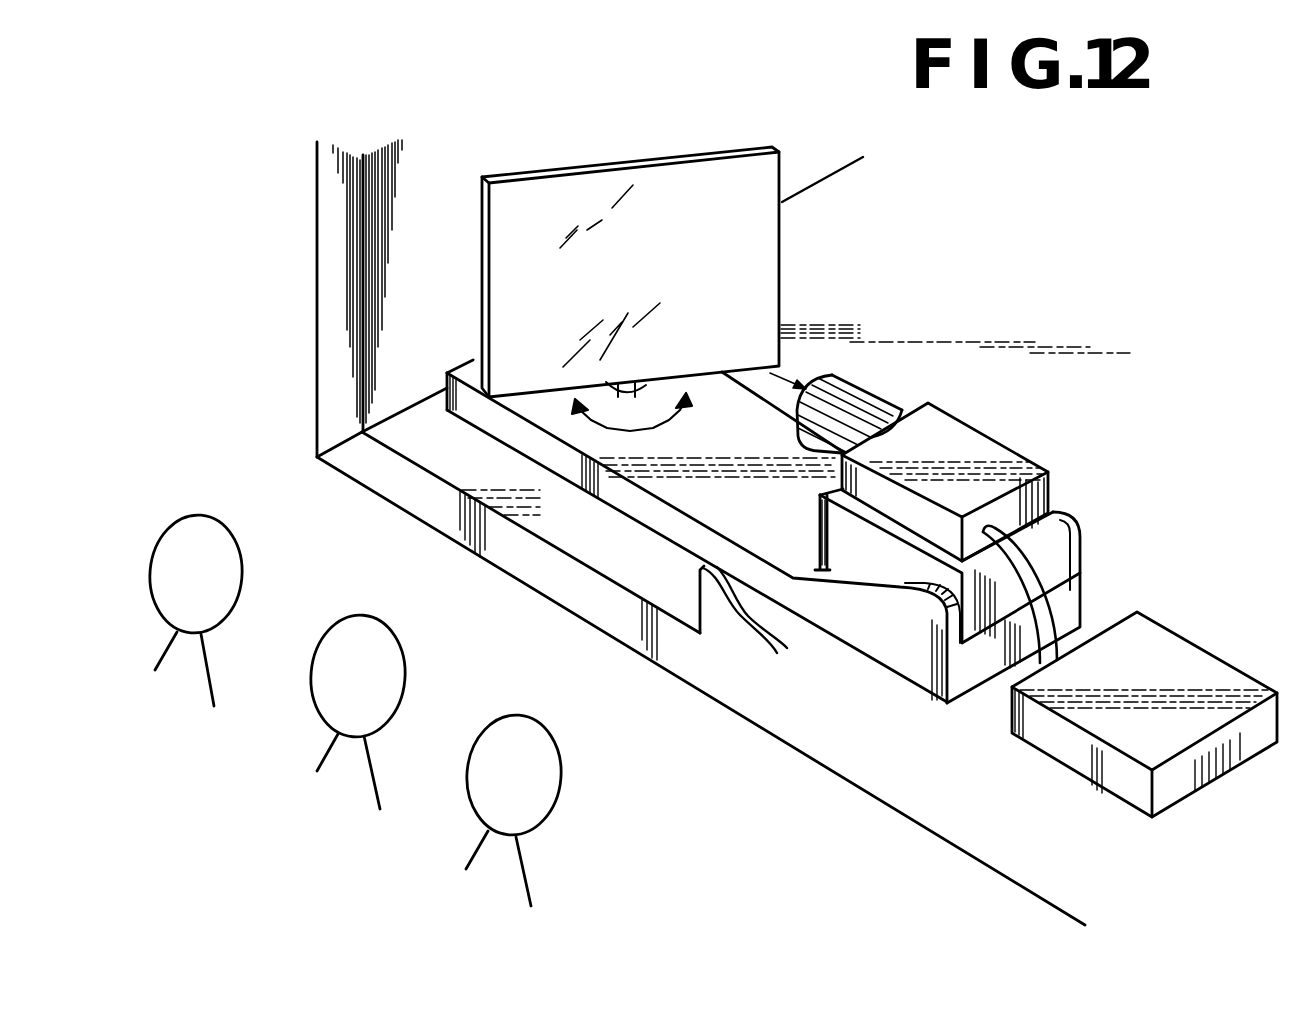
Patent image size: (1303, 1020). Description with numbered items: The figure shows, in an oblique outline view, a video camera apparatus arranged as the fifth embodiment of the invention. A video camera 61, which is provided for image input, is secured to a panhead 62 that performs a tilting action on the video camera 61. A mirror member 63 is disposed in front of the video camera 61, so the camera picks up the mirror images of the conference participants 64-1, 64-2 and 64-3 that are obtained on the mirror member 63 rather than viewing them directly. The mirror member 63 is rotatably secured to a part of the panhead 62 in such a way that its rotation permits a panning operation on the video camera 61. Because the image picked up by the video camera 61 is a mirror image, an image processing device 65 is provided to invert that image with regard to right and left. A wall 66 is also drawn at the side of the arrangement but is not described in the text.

The video camera 61 is at (988, 460).
The panhead 62 is at (840, 542).
The mirror member 63 is at (763, 260).
The participant 64-1 is at (199, 511).
The participant 64-2 is at (368, 614).
The participant 64-3 is at (516, 715).
The image processing device 65 is at (1170, 660).
The wall 66 is at (332, 273).